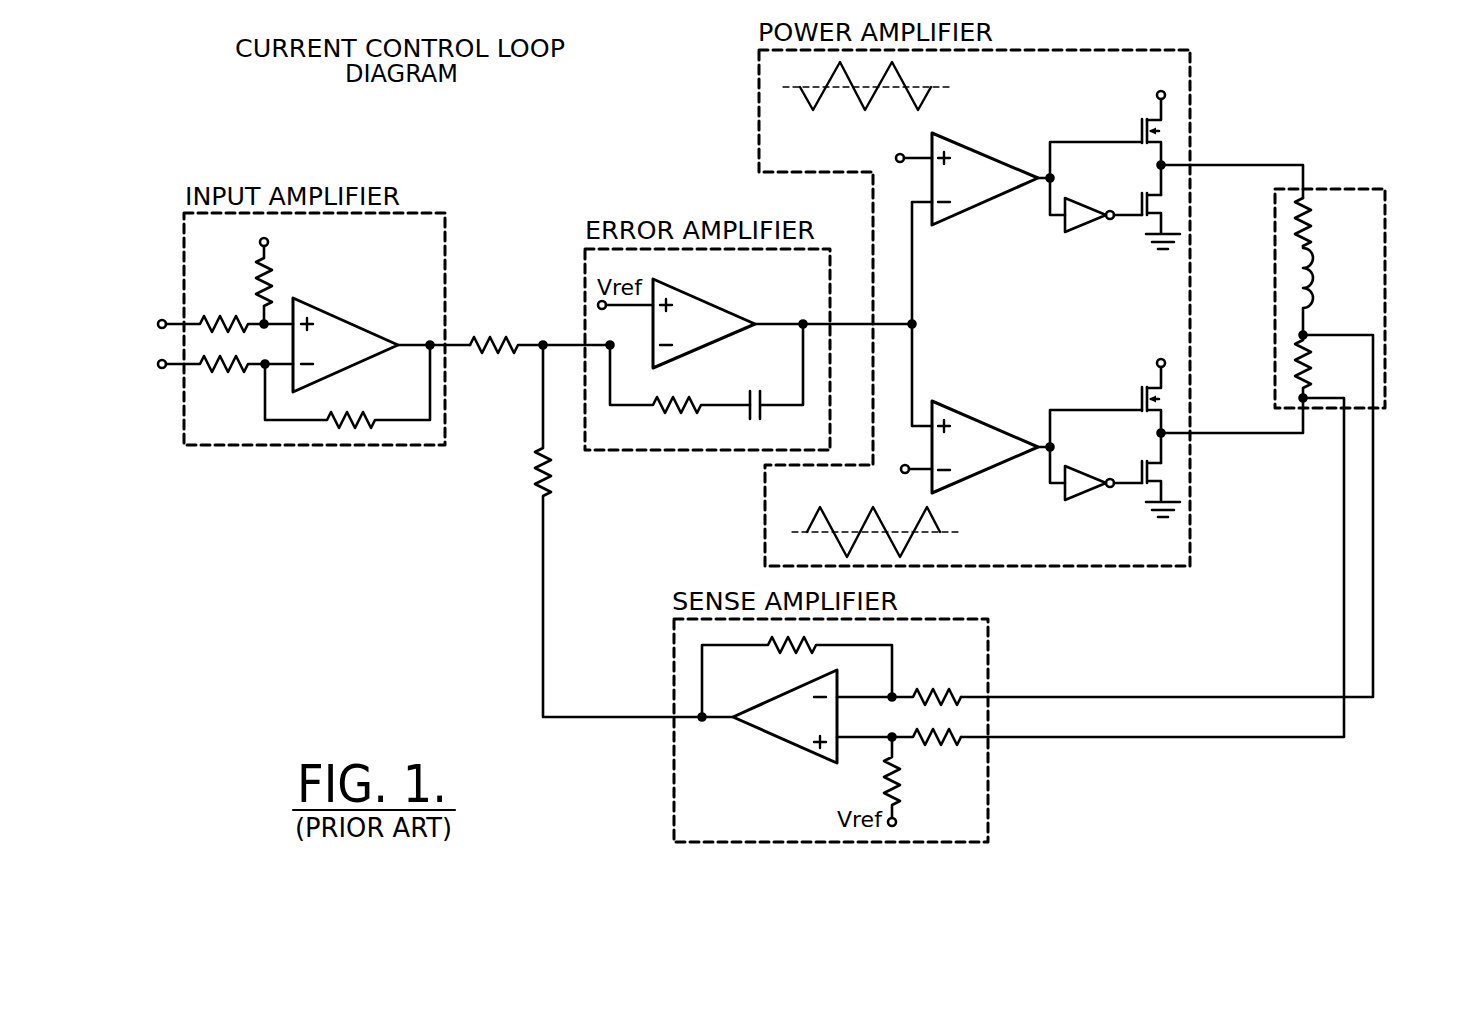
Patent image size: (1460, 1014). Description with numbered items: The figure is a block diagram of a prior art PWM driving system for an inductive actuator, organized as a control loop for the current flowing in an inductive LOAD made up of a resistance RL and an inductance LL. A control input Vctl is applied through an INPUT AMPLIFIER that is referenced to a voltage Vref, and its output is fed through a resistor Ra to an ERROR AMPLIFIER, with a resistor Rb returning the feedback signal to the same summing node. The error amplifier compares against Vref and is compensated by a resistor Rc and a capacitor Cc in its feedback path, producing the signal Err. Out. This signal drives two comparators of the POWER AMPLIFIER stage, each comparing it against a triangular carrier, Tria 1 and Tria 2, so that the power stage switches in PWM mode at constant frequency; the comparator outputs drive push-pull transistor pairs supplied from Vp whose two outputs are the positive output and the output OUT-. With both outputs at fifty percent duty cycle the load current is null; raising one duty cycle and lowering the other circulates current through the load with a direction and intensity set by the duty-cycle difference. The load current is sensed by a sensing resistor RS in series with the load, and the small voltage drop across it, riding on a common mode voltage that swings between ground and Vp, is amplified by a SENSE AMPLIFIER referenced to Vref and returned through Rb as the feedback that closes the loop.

The reference voltage input Vref is at (239, 274).
The control voltage input Vctl is at (215, 344).
The resistor Ra is at (540, 331).
The resistor Rb is at (616, 531).
The compensation resistor Rc is at (680, 393).
The compensation capacitor Cc is at (774, 383).
The error amplifier output Err. Out is at (882, 324).
The triangle wave 1 Tria 1 is at (866, 108).
The triangle wave 2 Tria 2 is at (875, 517).
The supply voltage Vp is at (1144, 235).
The output OUT- is at (1232, 430).
The inductive load LOAD is at (1365, 298).
The load resistance RL is at (1320, 222).
The load inductance LL is at (1322, 290).
The sensing resistor RS is at (1320, 366).